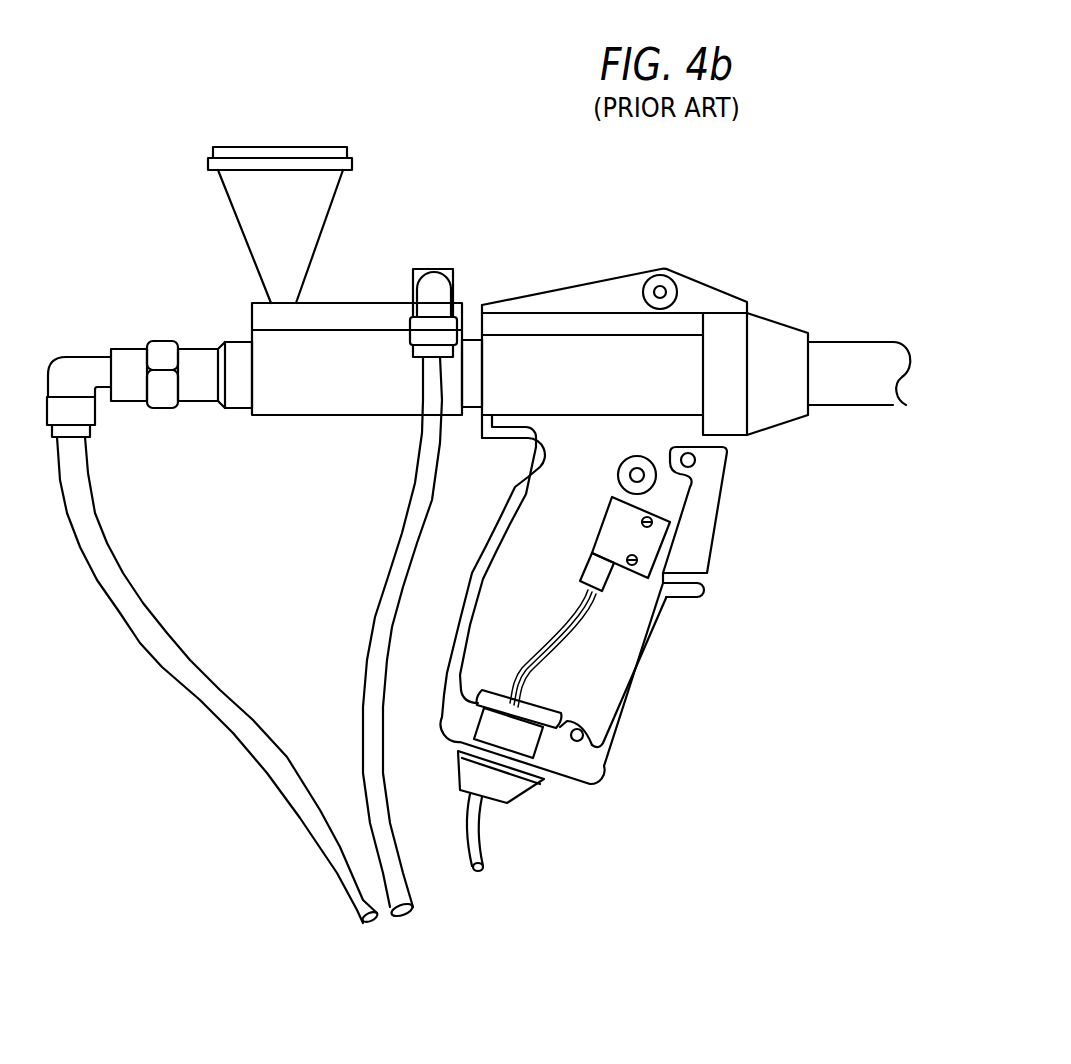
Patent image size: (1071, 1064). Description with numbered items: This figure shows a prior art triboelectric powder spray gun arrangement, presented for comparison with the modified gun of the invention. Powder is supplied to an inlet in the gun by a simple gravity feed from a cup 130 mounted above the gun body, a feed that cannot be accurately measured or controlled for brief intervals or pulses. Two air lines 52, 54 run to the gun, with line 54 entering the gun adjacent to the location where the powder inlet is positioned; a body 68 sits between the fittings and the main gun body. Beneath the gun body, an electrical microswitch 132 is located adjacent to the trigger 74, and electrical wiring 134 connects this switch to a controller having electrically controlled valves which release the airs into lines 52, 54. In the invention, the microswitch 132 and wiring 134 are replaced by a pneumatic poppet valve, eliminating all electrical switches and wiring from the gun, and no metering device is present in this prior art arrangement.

The cup 130 is at (326, 217).
The mixing block 68 is at (267, 350).
The line 52 is at (390, 583).
The line 54 is at (164, 660).
The trigger 74 is at (712, 507).
The electrical microswitch 132 is at (607, 517).
The electrical wiring 134 is at (560, 625).